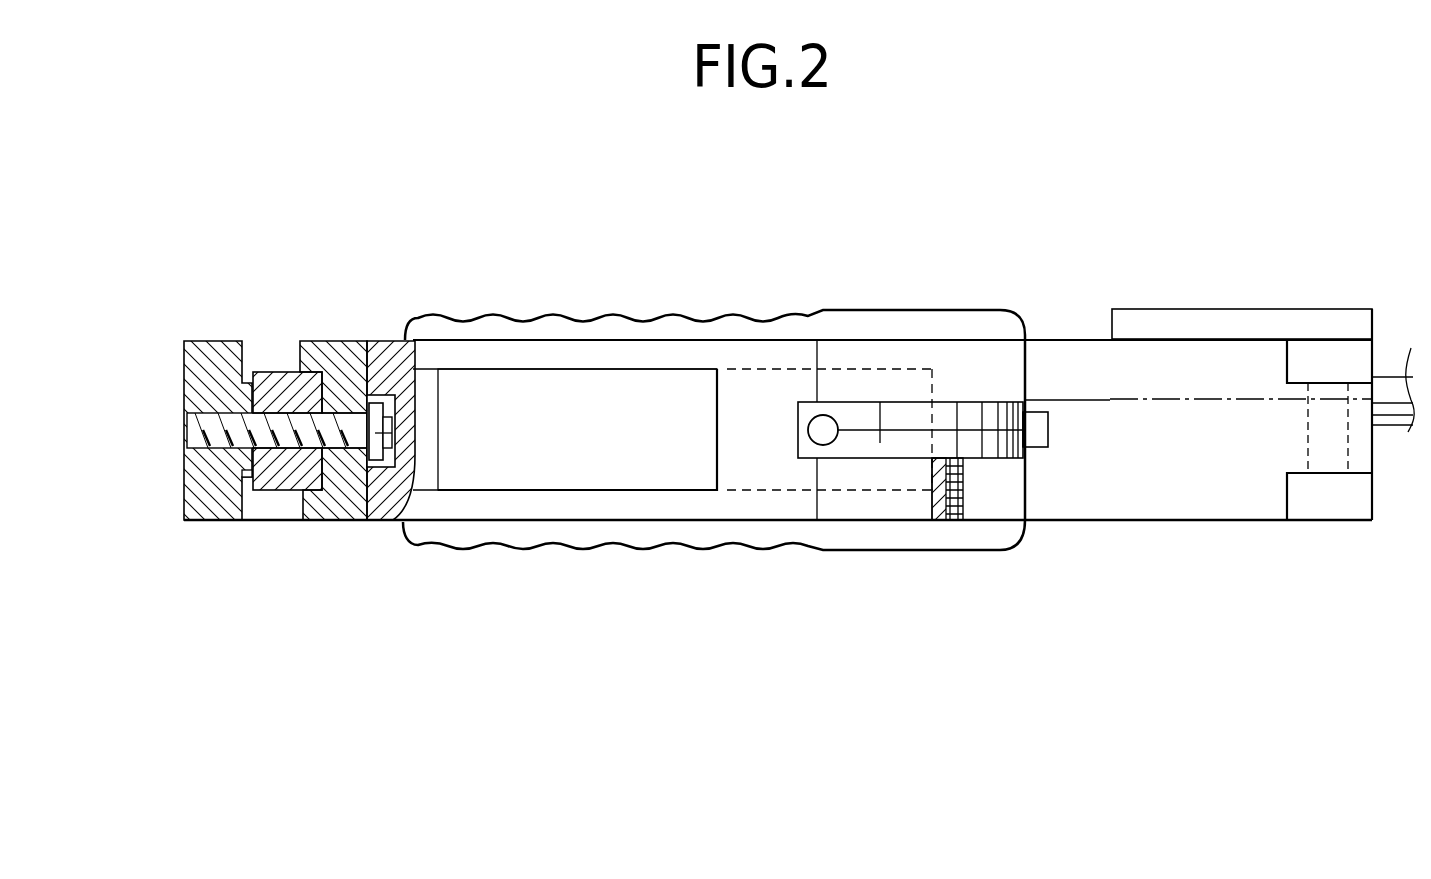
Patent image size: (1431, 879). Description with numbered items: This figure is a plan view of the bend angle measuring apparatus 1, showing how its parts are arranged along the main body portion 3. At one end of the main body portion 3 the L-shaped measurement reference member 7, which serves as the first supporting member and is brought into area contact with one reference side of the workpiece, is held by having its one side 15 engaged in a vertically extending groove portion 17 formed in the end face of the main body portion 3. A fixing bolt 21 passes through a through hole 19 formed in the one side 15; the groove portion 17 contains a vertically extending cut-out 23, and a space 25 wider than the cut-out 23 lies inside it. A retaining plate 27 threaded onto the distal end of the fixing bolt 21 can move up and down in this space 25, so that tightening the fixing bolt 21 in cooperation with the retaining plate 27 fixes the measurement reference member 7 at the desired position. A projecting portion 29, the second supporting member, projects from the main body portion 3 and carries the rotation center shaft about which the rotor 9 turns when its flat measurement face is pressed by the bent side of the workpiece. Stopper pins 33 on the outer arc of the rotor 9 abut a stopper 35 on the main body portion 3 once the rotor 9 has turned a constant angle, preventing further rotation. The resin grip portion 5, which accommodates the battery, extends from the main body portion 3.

The bend angle measuring apparatus 1 is at (1276, 250).
The main body portion 3 is at (1072, 333).
The grip portion 5 is at (775, 550).
The measurement reference member 7 is at (655, 415).
The rotor 9 is at (1013, 448).
The one side 15 is at (282, 372).
The groove portion 17 is at (287, 490).
The through hole 19 is at (263, 490).
The fixing bolt 21 is at (197, 428).
The cut-out 23 is at (348, 500).
The space 25 is at (396, 510).
The retaining plate 27 is at (385, 432).
The projecting portion 29 is at (870, 413).
The stopper pin 33 is at (807, 430).
The stopper 35 is at (955, 530).